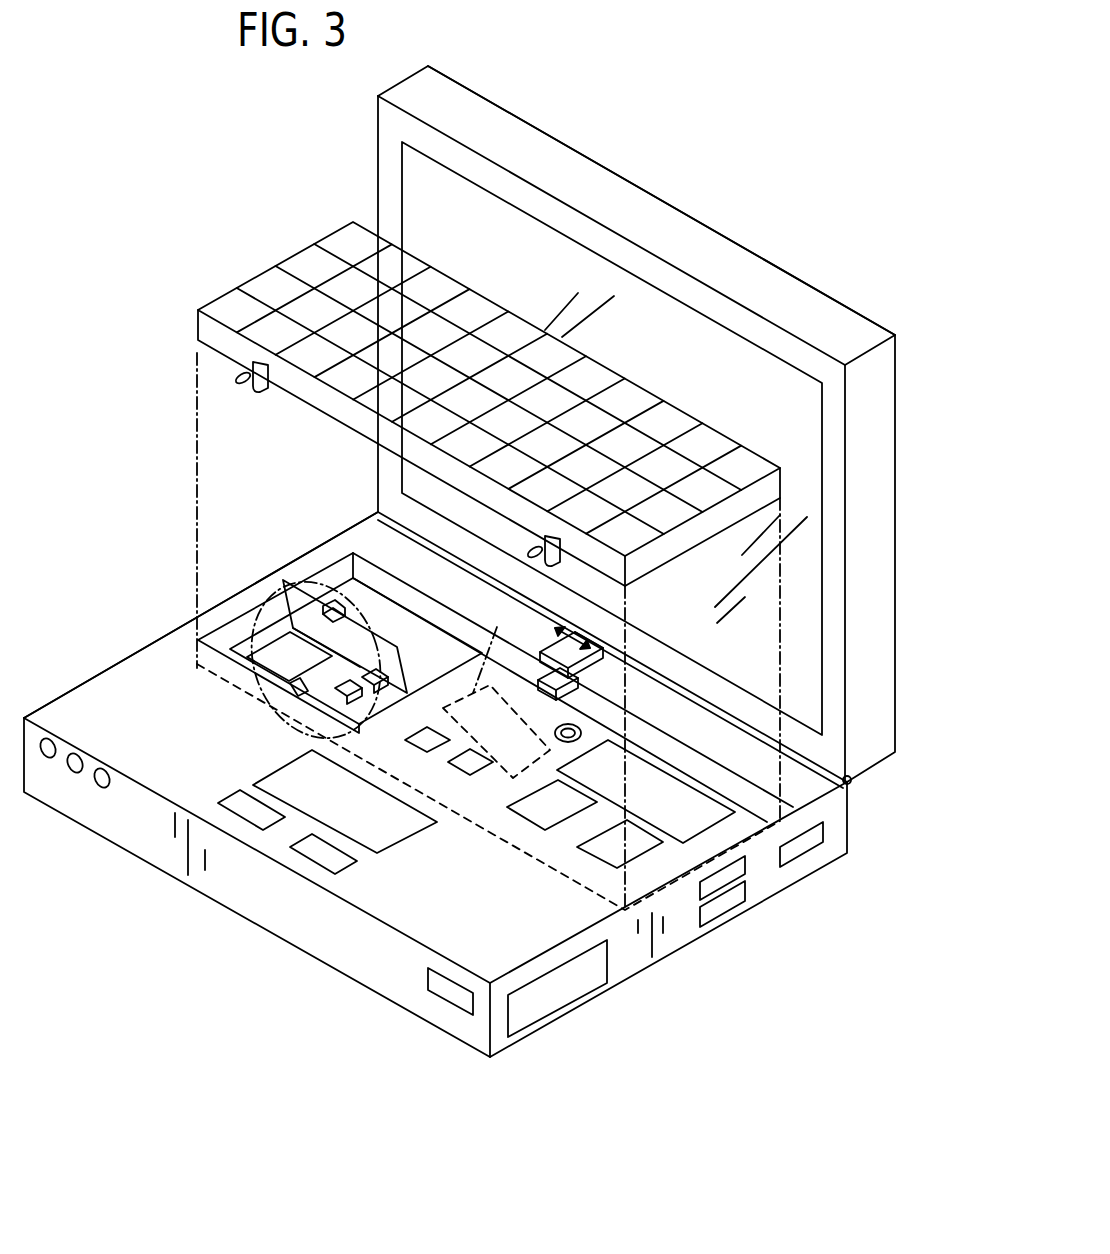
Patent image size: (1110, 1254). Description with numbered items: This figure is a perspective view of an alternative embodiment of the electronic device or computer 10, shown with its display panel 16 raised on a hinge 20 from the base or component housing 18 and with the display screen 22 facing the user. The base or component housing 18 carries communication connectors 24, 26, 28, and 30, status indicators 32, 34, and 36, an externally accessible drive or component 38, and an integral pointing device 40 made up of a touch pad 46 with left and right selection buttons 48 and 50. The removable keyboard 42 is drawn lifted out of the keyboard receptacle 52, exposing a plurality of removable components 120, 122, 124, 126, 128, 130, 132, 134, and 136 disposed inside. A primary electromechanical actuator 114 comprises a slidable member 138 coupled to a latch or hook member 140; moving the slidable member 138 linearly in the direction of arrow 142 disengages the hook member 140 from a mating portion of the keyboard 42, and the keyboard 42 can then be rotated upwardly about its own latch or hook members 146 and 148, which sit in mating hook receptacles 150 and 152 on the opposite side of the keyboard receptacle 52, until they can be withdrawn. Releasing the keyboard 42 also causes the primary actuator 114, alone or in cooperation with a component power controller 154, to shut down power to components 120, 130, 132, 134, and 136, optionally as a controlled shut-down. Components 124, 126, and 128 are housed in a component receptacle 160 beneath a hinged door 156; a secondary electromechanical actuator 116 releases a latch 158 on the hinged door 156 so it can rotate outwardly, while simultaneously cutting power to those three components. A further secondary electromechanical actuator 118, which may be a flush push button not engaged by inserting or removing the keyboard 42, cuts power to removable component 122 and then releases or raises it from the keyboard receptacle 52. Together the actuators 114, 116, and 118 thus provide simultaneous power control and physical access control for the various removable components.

The computer 10 is at (706, 94).
The display panel 16 is at (780, 262).
The base or component housing 18 is at (516, 1044).
The hinge 20 is at (855, 781).
The display screen 22 is at (525, 230).
The communication connector 24 is at (809, 856).
The communication connector 26 is at (725, 886).
The communication connector 28 is at (713, 928).
The communication connector 30 is at (437, 997).
The status indicator 32 is at (46, 758).
The status indicator 34 is at (73, 774).
The status indicator 36 is at (103, 790).
The externally accessible drive or component 38 is at (586, 985).
The integral pointing device 40 is at (215, 784).
The removable keyboard 42 is at (296, 252).
The touch pad 46 is at (392, 853).
The left selection button 48 is at (244, 824).
The right selection button 50 is at (311, 864).
The keyboard receptacle 52 is at (328, 556).
The primary electromechanical actuator 114 is at (616, 659).
The secondary electromechanical actuator 116 is at (285, 698).
The secondary electromechanical actuator 118 is at (583, 735).
The removable component 120 is at (368, 588).
The removable component 122 is at (742, 836).
The removable component 124 is at (272, 637).
The removable component 126 is at (340, 698).
The removable component 128 is at (345, 690).
The removable component 130 is at (423, 748).
The removable component 132 is at (470, 770).
The removable component 134 is at (520, 826).
The removable component 136 is at (594, 860).
The slidable member 138 is at (600, 640).
The latch or hook member 140 is at (576, 688).
The arrow 142 is at (578, 625).
The latch or hook member 146 is at (247, 385).
The latch or hook member 148 is at (537, 550).
The mating hook receptacle 150 is at (225, 697).
The mating hook receptacle 152 is at (545, 870).
The component power controller 154 is at (498, 645).
The hinged door 156 is at (318, 592).
The latch 158 is at (327, 605).
The component receptacle 160 is at (385, 722).